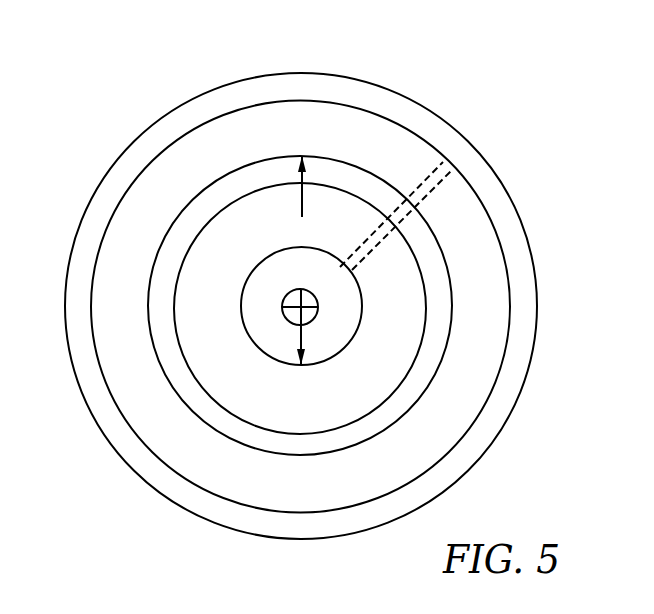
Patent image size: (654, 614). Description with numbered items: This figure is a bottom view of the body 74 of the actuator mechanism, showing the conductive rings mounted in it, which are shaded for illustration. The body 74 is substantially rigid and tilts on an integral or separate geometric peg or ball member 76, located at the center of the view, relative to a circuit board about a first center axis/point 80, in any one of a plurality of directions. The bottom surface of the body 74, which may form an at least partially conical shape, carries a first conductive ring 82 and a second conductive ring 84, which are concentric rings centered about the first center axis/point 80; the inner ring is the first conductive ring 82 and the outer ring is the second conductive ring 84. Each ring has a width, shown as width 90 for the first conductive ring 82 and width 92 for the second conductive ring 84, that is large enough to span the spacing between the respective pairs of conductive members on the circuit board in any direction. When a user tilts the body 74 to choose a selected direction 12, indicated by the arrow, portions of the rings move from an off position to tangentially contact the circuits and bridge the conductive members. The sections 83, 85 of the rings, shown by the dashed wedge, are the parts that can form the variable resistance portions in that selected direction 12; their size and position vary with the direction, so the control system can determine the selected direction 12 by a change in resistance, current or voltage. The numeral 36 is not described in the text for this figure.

The selected direction 12 is at (473, 137).
The partial numeral from adjacent figure 36 is at (92, 607).
The body 74 is at (180, 68).
The peg or ball member 76 is at (283, 315).
The first center axis/point 80 is at (293, 322).
The first conductive ring 82 is at (400, 262).
The section of conductive ring 83 is at (363, 240).
The second conductive ring 84 is at (495, 303).
The section of conductive ring 85 is at (437, 186).
The width of first conductive ring 90 is at (302, 435).
The width of second conductive ring 92 is at (302, 100).